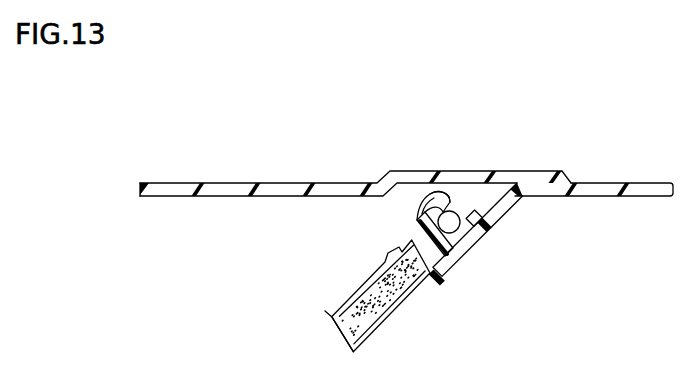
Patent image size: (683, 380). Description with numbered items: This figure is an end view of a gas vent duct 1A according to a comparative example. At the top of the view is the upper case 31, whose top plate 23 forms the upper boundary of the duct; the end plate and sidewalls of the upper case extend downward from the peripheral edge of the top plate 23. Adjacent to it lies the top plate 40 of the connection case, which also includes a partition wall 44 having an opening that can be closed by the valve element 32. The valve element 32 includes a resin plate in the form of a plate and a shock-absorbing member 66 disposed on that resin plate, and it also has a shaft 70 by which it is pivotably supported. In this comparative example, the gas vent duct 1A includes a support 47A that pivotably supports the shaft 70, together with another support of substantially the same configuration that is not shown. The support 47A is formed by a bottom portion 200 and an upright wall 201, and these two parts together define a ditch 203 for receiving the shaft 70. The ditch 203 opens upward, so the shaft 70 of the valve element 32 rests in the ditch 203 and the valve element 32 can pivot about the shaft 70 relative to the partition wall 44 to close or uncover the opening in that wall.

The gas vent duct 1A is at (519, 137).
The top plate 23 is at (196, 183).
The upper case 31 is at (355, 155).
The top plate 40 is at (644, 190).
The partition wall 44 is at (449, 271).
The shaft 70 is at (498, 225).
The support 47A is at (280, 198).
The bottom portion 200 is at (416, 240).
The upright wall 201 is at (421, 205).
The ditch 203 is at (449, 191).
The valve element 32 is at (334, 315).
The shock-absorbing member 66 is at (338, 341).